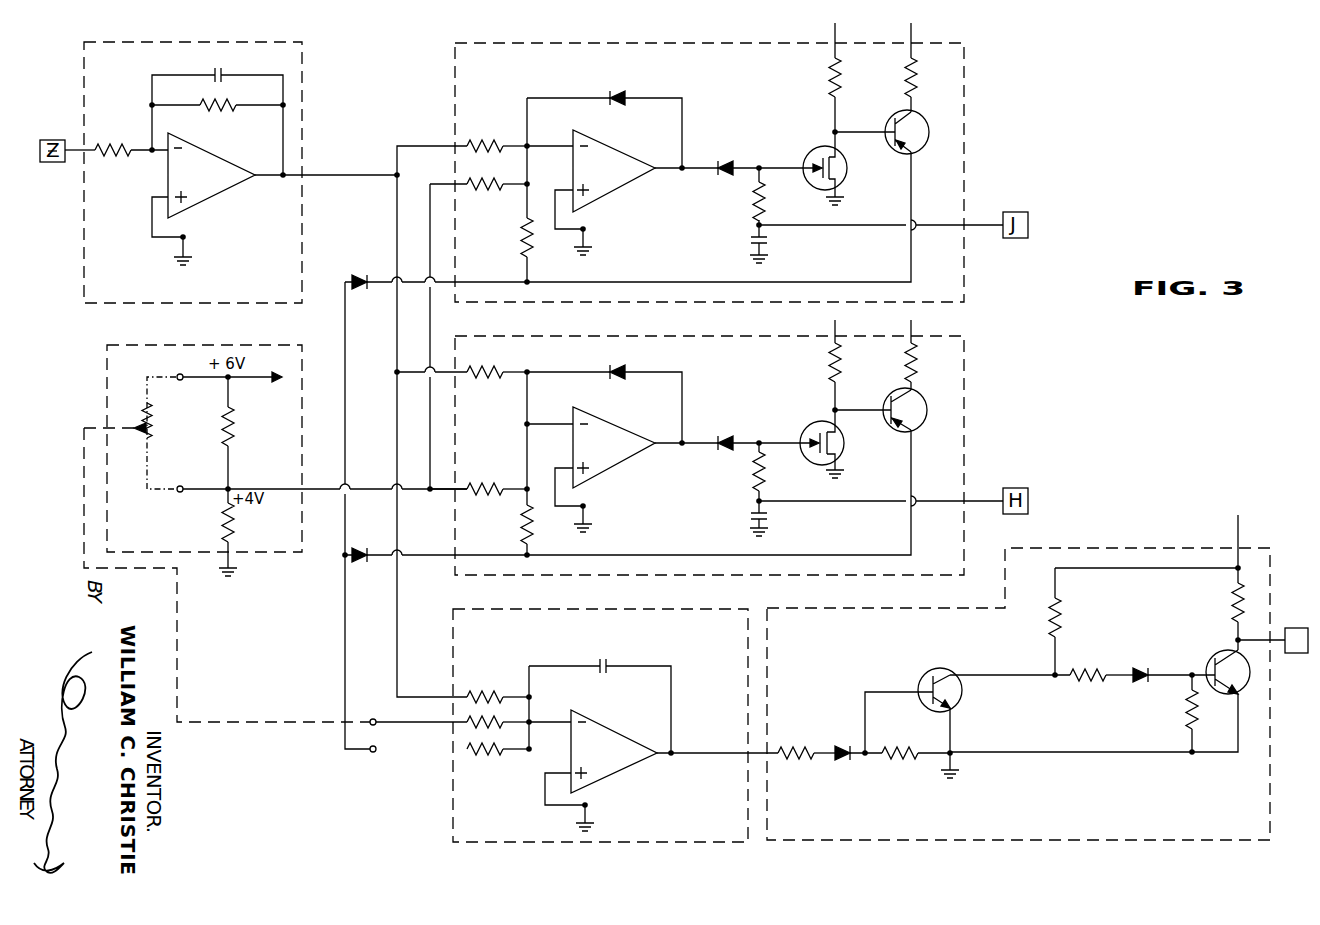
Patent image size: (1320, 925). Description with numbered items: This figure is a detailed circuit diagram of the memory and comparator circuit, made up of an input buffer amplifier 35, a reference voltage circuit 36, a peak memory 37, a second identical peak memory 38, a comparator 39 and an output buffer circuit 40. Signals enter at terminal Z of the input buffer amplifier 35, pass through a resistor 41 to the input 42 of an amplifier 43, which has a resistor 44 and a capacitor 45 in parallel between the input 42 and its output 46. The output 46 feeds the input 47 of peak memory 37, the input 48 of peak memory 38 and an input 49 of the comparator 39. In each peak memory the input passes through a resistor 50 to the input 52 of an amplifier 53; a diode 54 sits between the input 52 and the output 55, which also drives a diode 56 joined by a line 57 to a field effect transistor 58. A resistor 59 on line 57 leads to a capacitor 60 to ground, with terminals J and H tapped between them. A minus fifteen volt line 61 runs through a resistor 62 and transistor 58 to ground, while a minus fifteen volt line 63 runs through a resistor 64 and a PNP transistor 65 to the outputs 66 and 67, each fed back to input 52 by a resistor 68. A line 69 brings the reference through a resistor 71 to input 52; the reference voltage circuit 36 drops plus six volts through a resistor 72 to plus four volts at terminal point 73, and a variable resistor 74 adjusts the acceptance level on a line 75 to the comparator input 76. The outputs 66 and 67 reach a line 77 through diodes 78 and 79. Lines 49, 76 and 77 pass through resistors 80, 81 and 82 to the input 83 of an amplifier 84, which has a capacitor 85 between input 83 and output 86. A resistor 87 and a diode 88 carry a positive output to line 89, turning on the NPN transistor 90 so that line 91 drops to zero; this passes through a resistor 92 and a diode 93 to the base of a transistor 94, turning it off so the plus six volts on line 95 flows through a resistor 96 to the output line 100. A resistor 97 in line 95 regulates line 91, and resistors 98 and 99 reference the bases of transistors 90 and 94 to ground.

The input buffer amplifier 35 is at (325, 28).
The reference voltage circuit 36 is at (296, 330).
The peak memory 37 is at (633, 28).
The second peak memory 38 is at (684, 328).
The comparator 39 is at (655, 604).
The output buffer circuit 40 is at (828, 600).
The resistor 41 is at (128, 142).
The input 42 is at (140, 152).
The amplifier 43 is at (215, 155).
The resistor 44 is at (226, 100).
The capacitor 45 is at (222, 70).
The output 46 is at (296, 178).
The input 47 is at (428, 145).
The input 48 is at (416, 371).
The input 49 is at (436, 696).
The resistor 50 is at (499, 140).
The input 52 is at (545, 145).
The amplifier 53 is at (610, 147).
The diode 54 is at (614, 92).
The output 55 is at (696, 166).
The diode 56 is at (723, 160).
The line 57 is at (782, 164).
The field effect transistor 58 is at (847, 179).
The resistor 59 is at (767, 200).
The capacitor 60 is at (751, 237).
The -15 v. line 61 is at (832, 52).
The resistor 62 is at (832, 82).
The -15 v. line 63 is at (915, 51).
The resistor 64 is at (917, 83).
The PNP transistor 65 is at (924, 148).
The output 66 is at (479, 280).
The output 67 is at (428, 555).
The resistor 68 is at (520, 240).
The line 69 is at (294, 488).
The resistor 71 is at (483, 176).
The resistor 72 is at (233, 437).
The terminal point 73 is at (226, 488).
The variable resistor 74 is at (157, 420).
The line 75 is at (208, 722).
The input 76 is at (424, 718).
The line 77 is at (343, 640).
The diode 78 is at (372, 281).
The diode 79 is at (372, 553).
The resistor 80 is at (482, 694).
The resistor 81 is at (461, 732).
The resistor 82 is at (480, 756).
The input 83 is at (552, 718).
The amplifier 84 is at (613, 731).
The capacitor 85 is at (607, 664).
The output 86 is at (721, 751).
The resistor 87 is at (810, 745).
The diode 88 is at (841, 747).
The line 89 is at (887, 690).
The NPN transistor 90 is at (930, 676).
The line 91 is at (1024, 673).
The resistor 92 is at (1093, 682).
The diode 93 is at (1145, 672).
The transistor 94 is at (1216, 651).
The line 95 is at (1133, 568).
The resistor 96 is at (1232, 605).
The resistor 97 is at (1064, 603).
The resistor 98 is at (909, 761).
The resistor 99 is at (1183, 712).
The output line 100 is at (1258, 638).